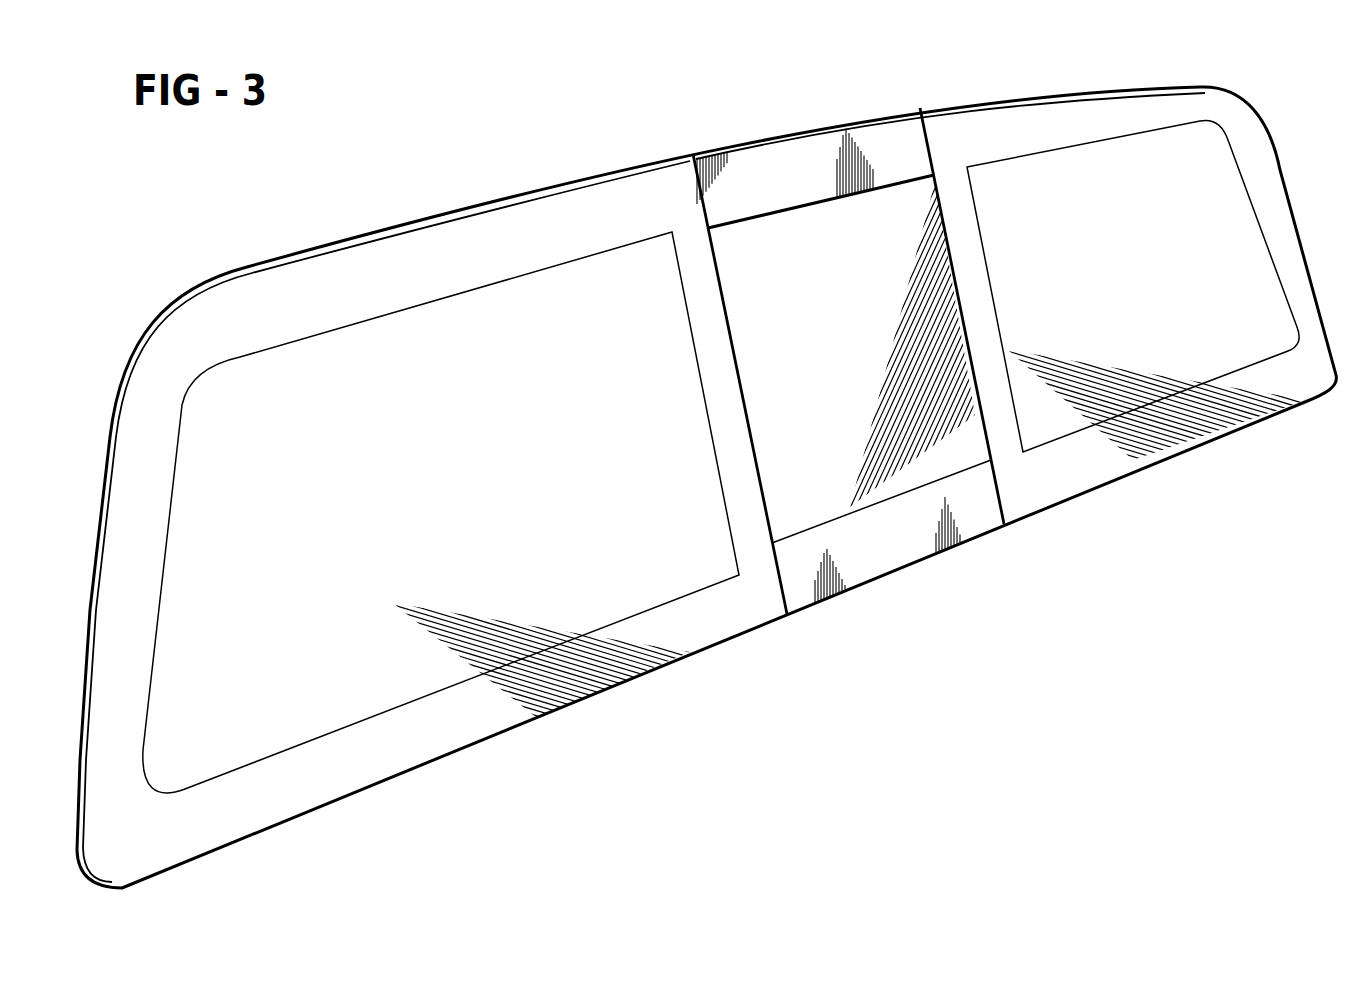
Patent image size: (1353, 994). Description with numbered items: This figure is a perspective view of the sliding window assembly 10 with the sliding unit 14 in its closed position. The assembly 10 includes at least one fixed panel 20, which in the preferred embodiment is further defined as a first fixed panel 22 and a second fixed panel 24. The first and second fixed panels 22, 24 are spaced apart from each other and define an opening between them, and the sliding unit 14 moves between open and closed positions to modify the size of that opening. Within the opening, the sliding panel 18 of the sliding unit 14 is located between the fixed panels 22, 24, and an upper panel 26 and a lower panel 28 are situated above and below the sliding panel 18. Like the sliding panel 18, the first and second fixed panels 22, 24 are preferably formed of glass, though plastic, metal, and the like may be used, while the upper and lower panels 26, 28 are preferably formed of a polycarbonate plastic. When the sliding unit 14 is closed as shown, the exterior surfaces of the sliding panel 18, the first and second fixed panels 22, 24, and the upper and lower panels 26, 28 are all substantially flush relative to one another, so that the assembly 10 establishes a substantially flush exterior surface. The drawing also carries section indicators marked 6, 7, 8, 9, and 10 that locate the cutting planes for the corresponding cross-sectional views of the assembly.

The fixed panel 20 is at (248, 269).
The first fixed panel 22 is at (500, 474).
The second fixed panel 24 is at (1143, 279).
The sliding panel 18 is at (835, 377).
The sliding unit 14 is at (790, 240).
The upper panel 26 is at (730, 146).
The lower panel 28 is at (903, 566).
The section line 6- 6 is at (422, 728).
The section line 7- 7 is at (673, 580).
The section line 8- 8 is at (953, 463).
The section line 9- 9 is at (477, 657).
The sliding window assembly 10 is at (613, 158).